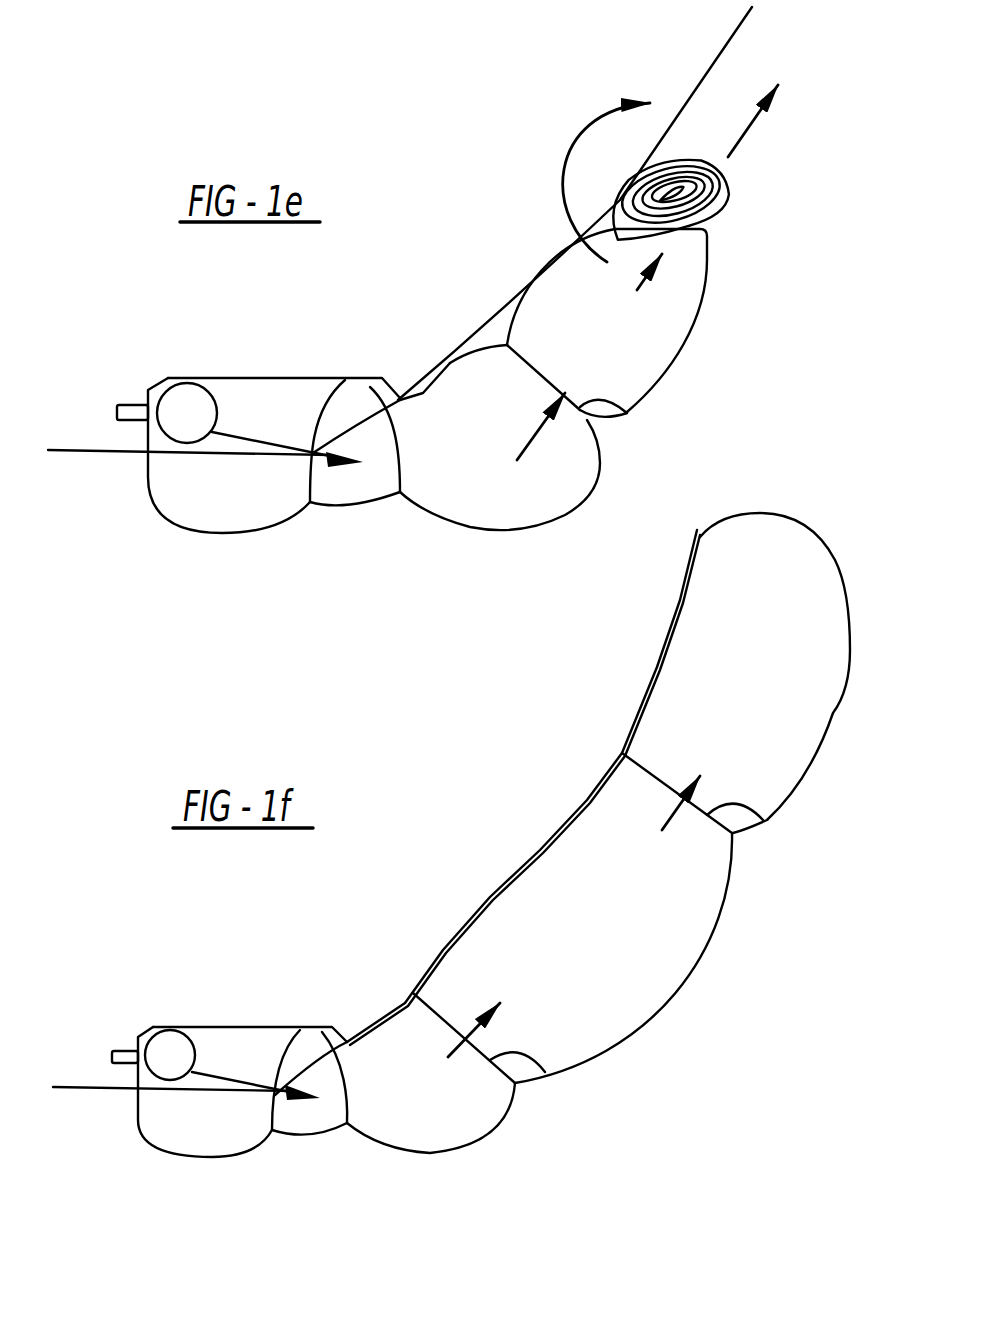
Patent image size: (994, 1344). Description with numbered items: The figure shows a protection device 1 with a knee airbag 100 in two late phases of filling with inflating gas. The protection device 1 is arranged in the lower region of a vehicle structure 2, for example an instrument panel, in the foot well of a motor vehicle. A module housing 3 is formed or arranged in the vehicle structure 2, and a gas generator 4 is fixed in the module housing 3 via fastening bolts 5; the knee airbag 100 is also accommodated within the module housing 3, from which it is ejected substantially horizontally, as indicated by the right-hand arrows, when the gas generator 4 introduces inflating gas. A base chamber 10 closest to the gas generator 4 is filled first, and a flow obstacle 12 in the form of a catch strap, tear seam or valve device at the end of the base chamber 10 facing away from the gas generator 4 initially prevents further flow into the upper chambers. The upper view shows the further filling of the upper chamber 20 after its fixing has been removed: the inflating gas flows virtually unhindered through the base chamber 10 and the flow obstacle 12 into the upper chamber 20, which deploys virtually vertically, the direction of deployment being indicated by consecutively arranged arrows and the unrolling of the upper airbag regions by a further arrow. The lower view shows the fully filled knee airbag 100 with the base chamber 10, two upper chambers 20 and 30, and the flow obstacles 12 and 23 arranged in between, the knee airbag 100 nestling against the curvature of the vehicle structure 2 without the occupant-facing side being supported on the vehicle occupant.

In FIG. 1e, the protection device 1 is at (224, 432).
In FIG. 1f, the protection device 1 is at (195, 1065).
In FIG. 1e, the vehicle structure 2 is at (733, 33).
In FIG. 1f, the vehicle structure 2 is at (647, 687).
In FIG. 1e, the module housing 3 is at (287, 377).
In FIG. 1f, the module housing 3 is at (263, 1027).
In FIG. 1e, the gas generator 4 is at (168, 383).
In FIG. 1f, the gas generator 4 is at (153, 1035).
In FIG. 1e, the fastening bolts 5 is at (133, 402).
In FIG. 1f, the fastening bolts 5 is at (130, 1047).
In FIG. 1e, the base chamber 10 is at (507, 497).
In FIG. 1f, the base chamber 10 is at (423, 1130).
In FIG. 1e, the flow obstacle 12 is at (627, 413).
In FIG. 1f, the flow obstacle 12 is at (545, 1072).
In FIG. 1e, the upper chamber 20 is at (648, 327).
In FIG. 1f, the upper chamber 20 is at (630, 983).
In FIG. 1f, the flow obstacle 23 is at (763, 820).
In FIG. 1f, the upper chamber 30 is at (798, 717).
In FIG. 1e, the knee airbag 100 is at (600, 413).
In FIG. 1f, the knee airbag 100 is at (598, 854).